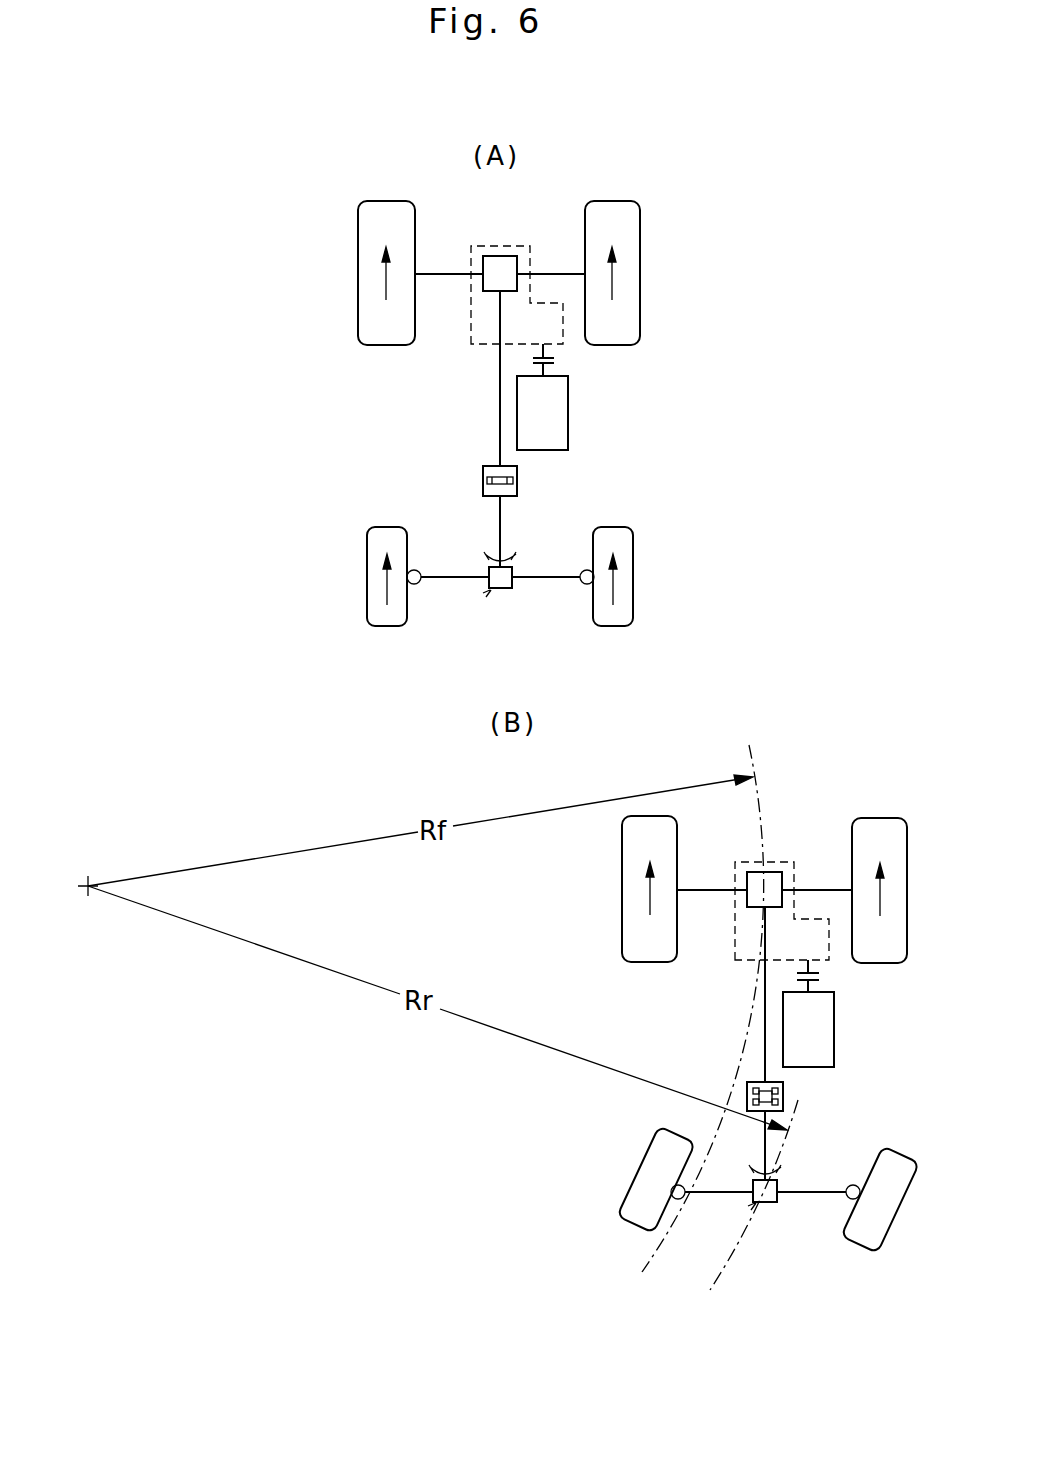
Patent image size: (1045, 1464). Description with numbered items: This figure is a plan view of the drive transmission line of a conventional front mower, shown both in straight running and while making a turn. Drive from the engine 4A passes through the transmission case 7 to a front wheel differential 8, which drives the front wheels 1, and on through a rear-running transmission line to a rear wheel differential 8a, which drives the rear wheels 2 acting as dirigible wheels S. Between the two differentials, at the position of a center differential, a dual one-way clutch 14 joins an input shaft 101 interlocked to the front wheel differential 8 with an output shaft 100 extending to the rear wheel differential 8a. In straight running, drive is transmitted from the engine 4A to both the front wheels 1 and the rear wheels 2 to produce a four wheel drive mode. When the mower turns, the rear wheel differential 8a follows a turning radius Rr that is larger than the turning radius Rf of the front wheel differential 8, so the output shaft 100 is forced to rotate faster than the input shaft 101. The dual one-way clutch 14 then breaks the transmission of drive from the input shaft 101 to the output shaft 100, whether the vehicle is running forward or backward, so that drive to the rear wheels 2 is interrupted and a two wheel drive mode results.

The front wheels 1 is at (358, 274).
The rear wheels 2 is at (367, 578).
The transmission case 7 is at (470, 318).
The front wheel differential 8 is at (500, 257).
The rear wheel differential 8a is at (507, 589).
The engine 4A is at (568, 415).
The dual one-way clutch 14 is at (517, 480).
The output shaft 100 is at (500, 528).
The input shaft 101 is at (500, 425).